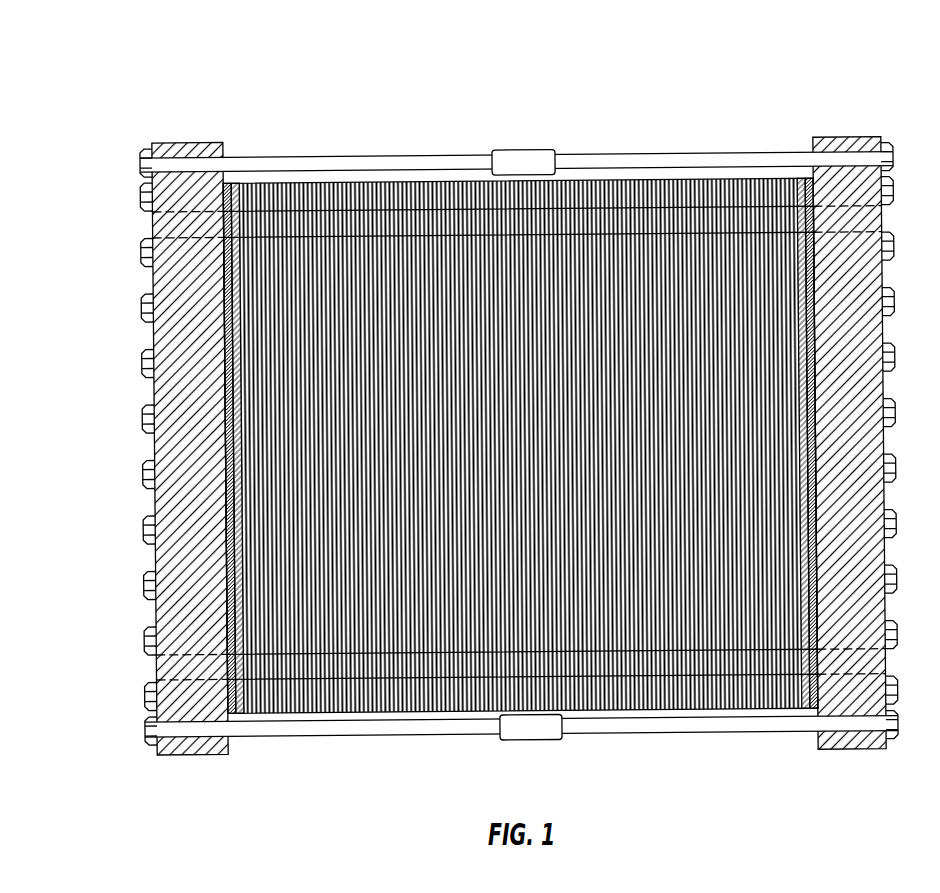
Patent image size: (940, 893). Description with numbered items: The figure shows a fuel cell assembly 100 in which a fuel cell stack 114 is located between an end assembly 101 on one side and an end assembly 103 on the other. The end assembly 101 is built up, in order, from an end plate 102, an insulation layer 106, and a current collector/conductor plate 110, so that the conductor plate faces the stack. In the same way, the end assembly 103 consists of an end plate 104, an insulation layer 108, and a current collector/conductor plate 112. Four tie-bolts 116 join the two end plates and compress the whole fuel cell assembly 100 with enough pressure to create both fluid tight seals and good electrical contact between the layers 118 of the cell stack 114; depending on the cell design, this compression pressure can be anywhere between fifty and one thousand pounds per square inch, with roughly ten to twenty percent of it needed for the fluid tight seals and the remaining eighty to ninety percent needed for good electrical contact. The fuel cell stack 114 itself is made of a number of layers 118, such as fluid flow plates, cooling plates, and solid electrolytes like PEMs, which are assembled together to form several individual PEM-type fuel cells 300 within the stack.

The fuel cell assembly 100 is at (452, 36).
The end assembly 101 is at (215, 397).
The end plate 102 is at (170, 429).
The end assembly 103 is at (817, 394).
The end plate 104 is at (862, 423).
The insulation layer 106 is at (264, 401).
The insulation layer 108 is at (775, 395).
The current collector/conductor plate 110 is at (274, 416).
The current collector/conductor plate 112 is at (766, 411).
The fuel cell stack 114 is at (520, 432).
The tie-bolts 116 is at (519, 449).
The layers 118 is at (520, 486).
The PEM-type fuel cells 300 is at (638, 185).